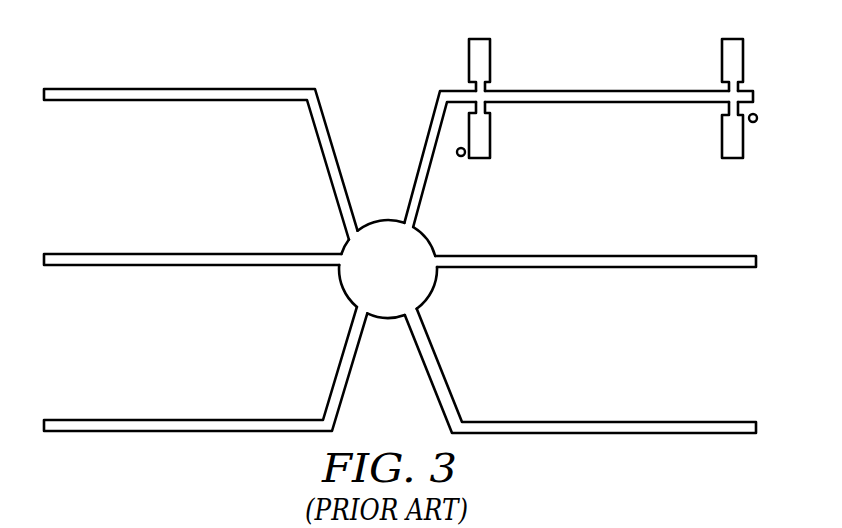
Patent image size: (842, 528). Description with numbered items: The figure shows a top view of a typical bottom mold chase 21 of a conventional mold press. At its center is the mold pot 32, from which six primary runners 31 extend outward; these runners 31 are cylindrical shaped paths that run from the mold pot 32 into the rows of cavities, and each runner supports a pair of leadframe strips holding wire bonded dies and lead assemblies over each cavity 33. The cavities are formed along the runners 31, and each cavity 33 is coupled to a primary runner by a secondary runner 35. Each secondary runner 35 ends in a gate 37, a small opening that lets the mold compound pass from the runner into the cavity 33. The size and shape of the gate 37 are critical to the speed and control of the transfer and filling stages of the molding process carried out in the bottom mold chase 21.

The bottom mold chase 21 is at (400, 216).
The primary runners 31 is at (113, 89).
The mold pot 32 is at (401, 280).
The cavity 33 is at (485, 160).
The secondary runner 35 is at (474, 88).
The gate 37 is at (722, 86).